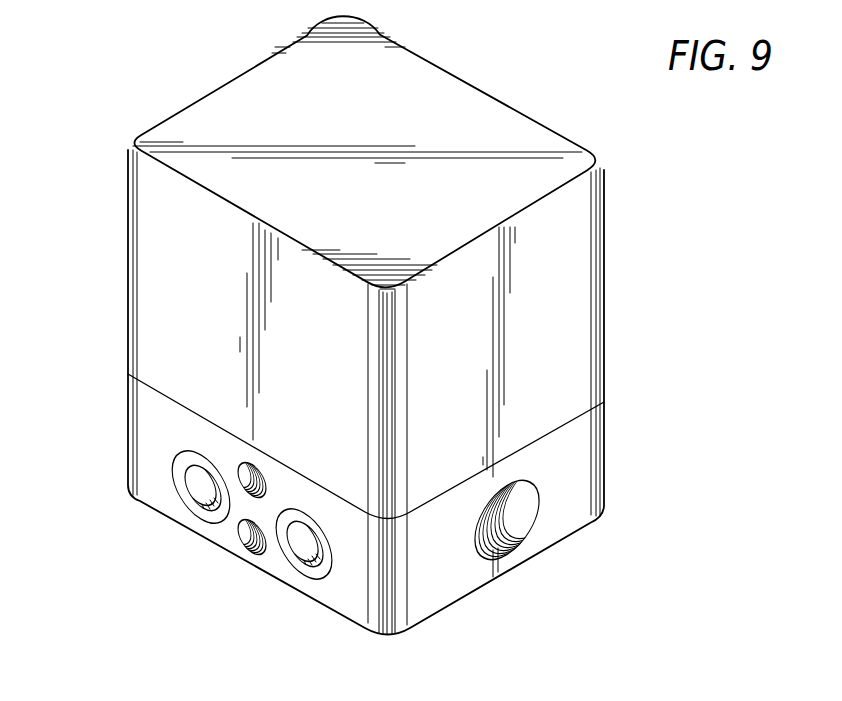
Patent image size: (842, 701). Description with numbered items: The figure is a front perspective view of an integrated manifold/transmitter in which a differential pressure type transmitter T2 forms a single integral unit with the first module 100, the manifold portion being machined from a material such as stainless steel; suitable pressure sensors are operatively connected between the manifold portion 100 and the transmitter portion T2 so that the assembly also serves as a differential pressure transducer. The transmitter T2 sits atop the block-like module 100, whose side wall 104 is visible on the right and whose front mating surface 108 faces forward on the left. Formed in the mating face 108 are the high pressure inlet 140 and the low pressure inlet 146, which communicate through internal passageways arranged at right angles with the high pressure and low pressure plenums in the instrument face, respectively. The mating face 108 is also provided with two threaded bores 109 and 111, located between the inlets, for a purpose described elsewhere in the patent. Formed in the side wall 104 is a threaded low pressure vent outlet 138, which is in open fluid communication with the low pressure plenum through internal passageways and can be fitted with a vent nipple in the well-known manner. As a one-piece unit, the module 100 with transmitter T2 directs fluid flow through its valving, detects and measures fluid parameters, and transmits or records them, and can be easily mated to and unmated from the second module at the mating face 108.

The first module 100 is at (616, 448).
The side wall 104 is at (577, 503).
The front mating surface 108 is at (147, 428).
The threaded bore 109 is at (256, 475).
The threaded bore 111 is at (243, 548).
The threaded low pressure vent outlet 138 is at (503, 533).
The high pressure inlet 140 is at (210, 481).
The low pressure inlet 146 is at (312, 541).
The transmitter T2 is at (226, 76).